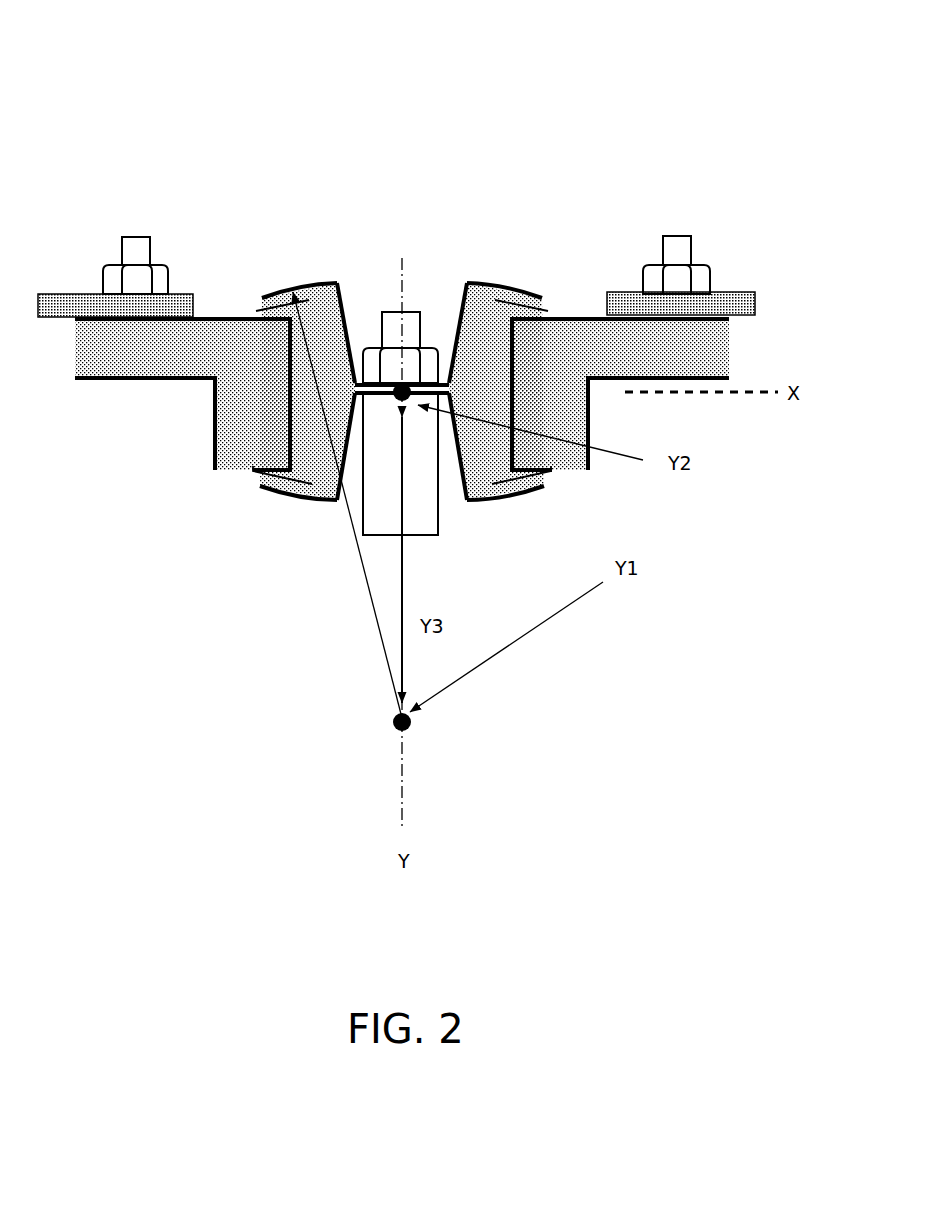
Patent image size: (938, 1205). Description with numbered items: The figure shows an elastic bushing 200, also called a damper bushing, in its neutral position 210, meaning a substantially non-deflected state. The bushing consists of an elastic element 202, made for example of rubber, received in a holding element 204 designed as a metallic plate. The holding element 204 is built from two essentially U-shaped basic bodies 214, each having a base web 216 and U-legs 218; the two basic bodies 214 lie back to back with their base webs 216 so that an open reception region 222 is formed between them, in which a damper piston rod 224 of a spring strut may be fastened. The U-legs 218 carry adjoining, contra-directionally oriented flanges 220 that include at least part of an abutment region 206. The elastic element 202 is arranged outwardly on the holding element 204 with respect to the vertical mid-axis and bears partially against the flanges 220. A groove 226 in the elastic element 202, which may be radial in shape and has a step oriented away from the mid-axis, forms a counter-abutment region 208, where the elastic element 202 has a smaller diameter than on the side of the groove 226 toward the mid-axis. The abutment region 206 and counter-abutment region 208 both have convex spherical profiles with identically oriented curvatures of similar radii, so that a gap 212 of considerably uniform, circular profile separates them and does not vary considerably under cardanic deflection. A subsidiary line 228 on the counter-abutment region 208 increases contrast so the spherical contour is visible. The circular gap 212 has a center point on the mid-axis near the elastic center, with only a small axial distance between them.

The elastic bushing 200 is at (158, 68).
The elastic element 202 is at (327, 347).
The holding element 204 is at (498, 273).
The abutment region 206 is at (285, 292).
The counter-abutment region 208 is at (258, 312).
The neutral position 210 is at (406, 235).
The gap 212 is at (260, 300).
The basic body 214 is at (340, 307).
The base web 216 is at (398, 400).
The U-legs 218 is at (460, 483).
The flanges 220 is at (283, 490).
The reception region 222 is at (468, 525).
The damper piston rod 224 is at (385, 515).
The groove 226 is at (313, 485).
The subsidiary line 228 is at (548, 307).